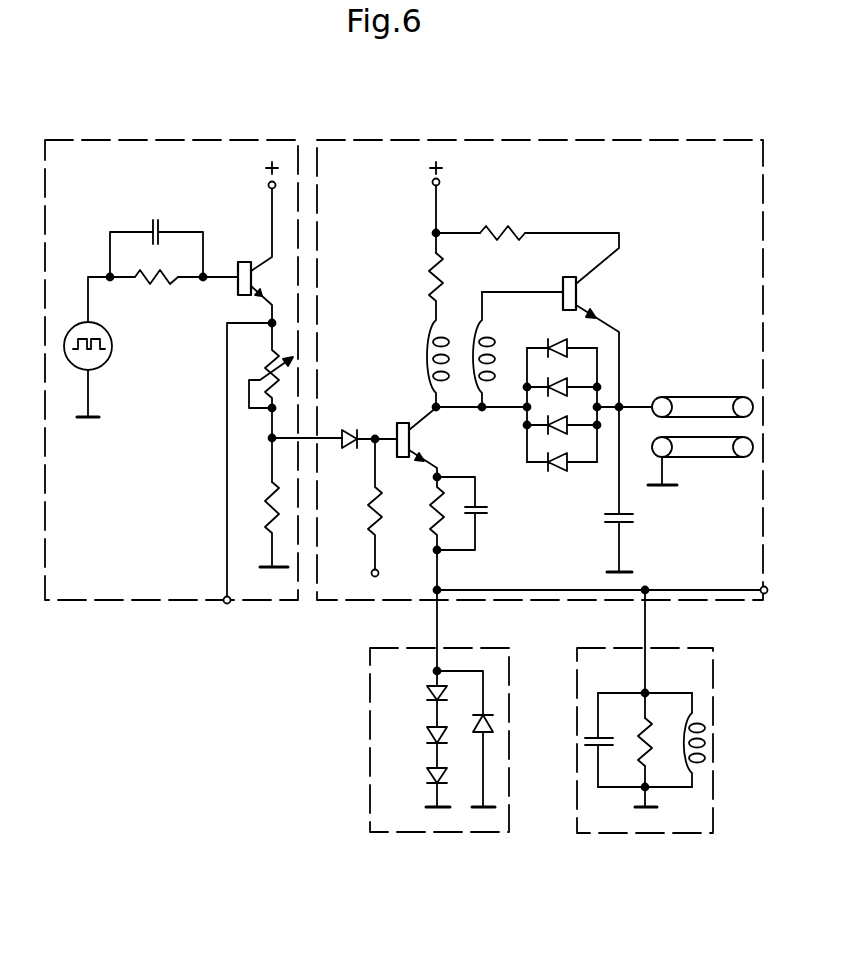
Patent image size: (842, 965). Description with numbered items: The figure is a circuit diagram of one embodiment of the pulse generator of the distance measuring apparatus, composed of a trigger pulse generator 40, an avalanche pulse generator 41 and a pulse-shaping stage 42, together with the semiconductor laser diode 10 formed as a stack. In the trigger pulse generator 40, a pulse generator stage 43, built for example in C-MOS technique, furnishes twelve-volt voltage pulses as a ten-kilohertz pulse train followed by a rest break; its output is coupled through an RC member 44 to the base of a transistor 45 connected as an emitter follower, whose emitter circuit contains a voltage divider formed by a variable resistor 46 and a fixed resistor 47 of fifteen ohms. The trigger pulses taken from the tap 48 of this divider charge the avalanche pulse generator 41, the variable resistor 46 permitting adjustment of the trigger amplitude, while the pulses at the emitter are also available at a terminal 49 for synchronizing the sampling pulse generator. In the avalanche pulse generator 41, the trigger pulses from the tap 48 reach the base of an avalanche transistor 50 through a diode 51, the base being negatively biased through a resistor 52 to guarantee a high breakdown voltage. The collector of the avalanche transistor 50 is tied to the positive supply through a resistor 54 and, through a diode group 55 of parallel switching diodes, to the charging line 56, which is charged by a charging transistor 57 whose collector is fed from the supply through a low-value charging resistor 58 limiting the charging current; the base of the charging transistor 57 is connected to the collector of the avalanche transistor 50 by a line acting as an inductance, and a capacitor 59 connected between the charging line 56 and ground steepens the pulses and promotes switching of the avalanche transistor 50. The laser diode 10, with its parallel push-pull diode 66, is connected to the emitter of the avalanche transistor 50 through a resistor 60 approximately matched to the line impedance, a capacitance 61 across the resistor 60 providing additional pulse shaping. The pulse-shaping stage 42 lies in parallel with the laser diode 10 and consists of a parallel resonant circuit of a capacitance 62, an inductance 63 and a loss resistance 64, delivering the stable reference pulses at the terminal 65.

The semiconductor laser diode 10 is at (379, 778).
The trigger pulse generator 40 is at (200, 160).
The avalanche pulse generator 41 is at (557, 160).
The pulse-shaping stage 42 is at (605, 820).
The pulse generator stage 43 is at (99, 358).
The RC member 44 is at (128, 240).
The transistor 45 is at (246, 262).
The variable resistor 46 is at (270, 353).
The fixed resistor 47 is at (270, 497).
The tap 48 is at (270, 438).
The terminal 49 is at (224, 596).
The avalanche transistor 50 is at (402, 418).
The diode 51 is at (347, 425).
The resistor 52 is at (368, 492).
The resistor 54 is at (430, 262).
The diode group 55 is at (538, 462).
The charging line 56 is at (702, 423).
The charging transistor 57 is at (566, 277).
The charging resistor 58 is at (498, 220).
The capacitor 59 is at (632, 520).
The resistor 60 is at (433, 520).
The capacitance 61 is at (487, 513).
The capacitance 62 is at (587, 748).
The inductance 63 is at (703, 745).
The loss resistance 64 is at (638, 732).
The terminal 65 is at (760, 587).
The push-pull diode 66 is at (493, 727).